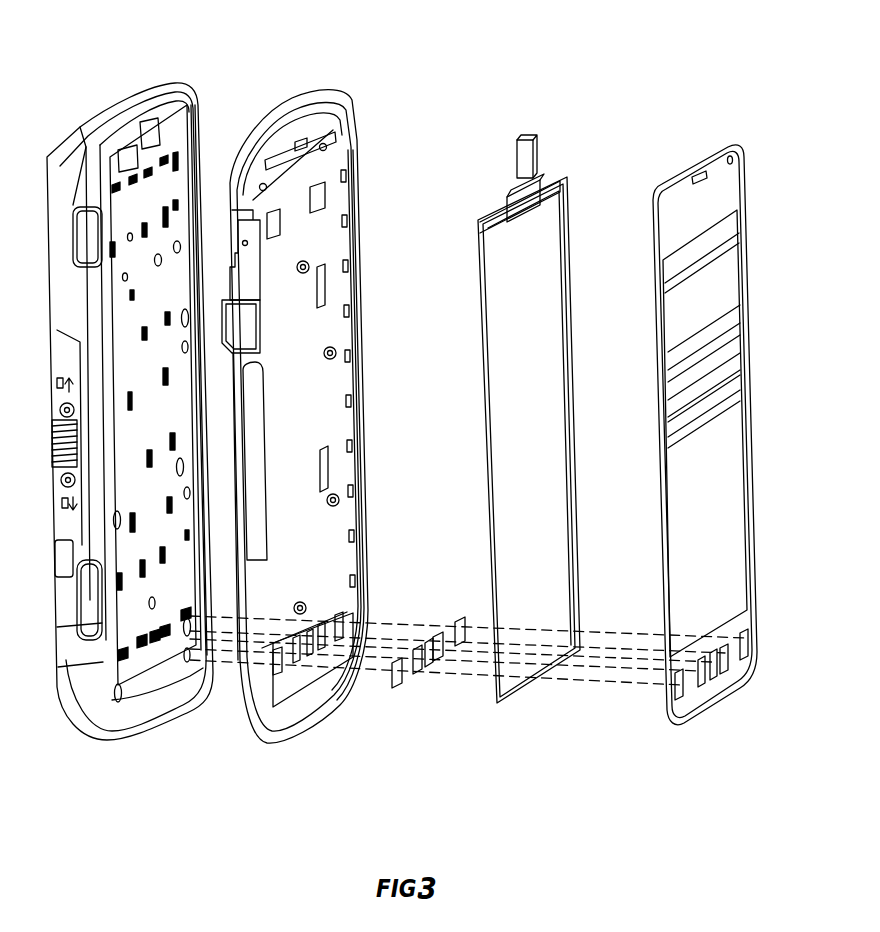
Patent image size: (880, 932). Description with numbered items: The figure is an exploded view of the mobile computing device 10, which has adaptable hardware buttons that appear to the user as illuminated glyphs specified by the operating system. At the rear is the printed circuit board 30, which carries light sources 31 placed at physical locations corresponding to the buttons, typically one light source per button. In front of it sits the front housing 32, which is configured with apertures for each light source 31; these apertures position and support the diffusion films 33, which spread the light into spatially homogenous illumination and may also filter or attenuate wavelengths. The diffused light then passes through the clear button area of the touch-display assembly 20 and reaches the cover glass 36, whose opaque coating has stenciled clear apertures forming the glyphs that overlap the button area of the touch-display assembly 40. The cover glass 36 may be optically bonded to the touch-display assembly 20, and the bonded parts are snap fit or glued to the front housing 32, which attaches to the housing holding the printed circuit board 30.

The mobile computing device 10 is at (47, 80).
The printed circuit board 30 is at (172, 186).
The light sources 31 is at (185, 617).
The front housing 32 is at (357, 183).
The diffusion films 33 is at (459, 642).
The touch-display assembly 20 is at (567, 155).
The cover glass 36 is at (749, 158).
The touch-display assembly 40 is at (720, 682).